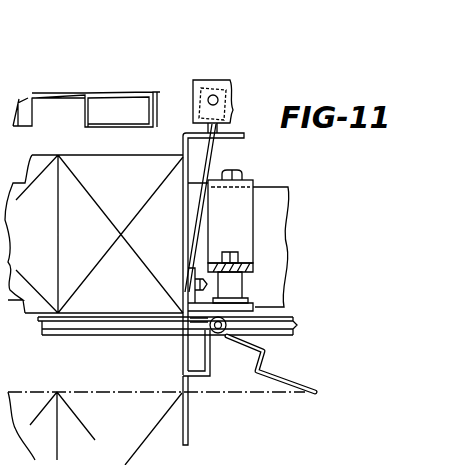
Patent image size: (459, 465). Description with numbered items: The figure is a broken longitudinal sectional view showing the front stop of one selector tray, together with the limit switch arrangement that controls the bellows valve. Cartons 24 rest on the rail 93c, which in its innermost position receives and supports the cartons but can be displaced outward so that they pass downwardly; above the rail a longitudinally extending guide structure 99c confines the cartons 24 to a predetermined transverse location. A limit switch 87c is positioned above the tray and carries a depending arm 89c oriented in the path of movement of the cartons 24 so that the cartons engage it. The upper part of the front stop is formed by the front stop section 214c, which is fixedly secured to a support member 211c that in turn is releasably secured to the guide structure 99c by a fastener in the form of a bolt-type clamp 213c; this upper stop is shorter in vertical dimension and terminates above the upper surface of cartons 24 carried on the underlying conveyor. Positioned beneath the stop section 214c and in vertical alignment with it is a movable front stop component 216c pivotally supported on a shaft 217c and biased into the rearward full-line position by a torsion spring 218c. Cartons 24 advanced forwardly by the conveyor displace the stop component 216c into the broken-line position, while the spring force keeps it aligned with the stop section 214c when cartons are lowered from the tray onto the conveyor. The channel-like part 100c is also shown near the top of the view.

The cartons 24 is at (97, 150).
The limit switch 87c is at (238, 62).
The depending arm 89c is at (208, 166).
The rail 93c is at (90, 318).
The guide structure 99c is at (288, 238).
The channel tray 100c is at (100, 94).
The support member 211c is at (187, 296).
The bolt-type clamp 213c is at (254, 190).
The front stop section 214c is at (183, 238).
The movable front stop component 216c is at (188, 422).
The shaft 217c is at (225, 333).
The torsion spring 218c is at (208, 349).